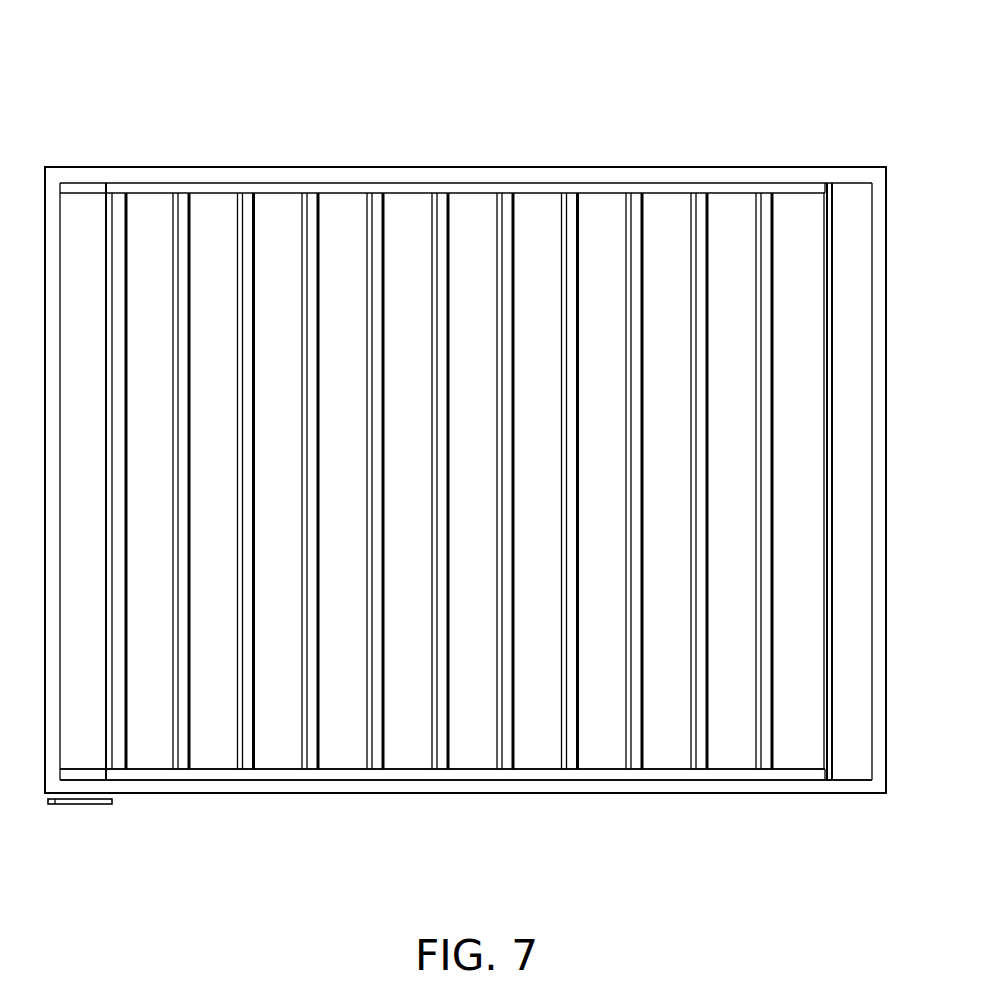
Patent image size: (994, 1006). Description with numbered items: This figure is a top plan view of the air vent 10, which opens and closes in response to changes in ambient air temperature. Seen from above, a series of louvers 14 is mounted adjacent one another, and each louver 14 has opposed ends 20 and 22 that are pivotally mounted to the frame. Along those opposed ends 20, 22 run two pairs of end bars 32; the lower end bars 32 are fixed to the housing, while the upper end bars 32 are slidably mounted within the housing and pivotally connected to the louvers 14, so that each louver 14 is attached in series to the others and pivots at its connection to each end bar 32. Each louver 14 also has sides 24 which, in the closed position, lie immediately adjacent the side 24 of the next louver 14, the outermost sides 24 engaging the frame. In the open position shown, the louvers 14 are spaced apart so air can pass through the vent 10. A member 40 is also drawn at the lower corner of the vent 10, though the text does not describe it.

The air vent 10 is at (684, 120).
The louver 14 is at (507, 205).
The louver end 20 is at (572, 770).
The louver end 22 is at (182, 193).
The louver side 24 is at (303, 688).
The end bar 32 is at (313, 188).
The foot / leveling member 40 is at (73, 805).